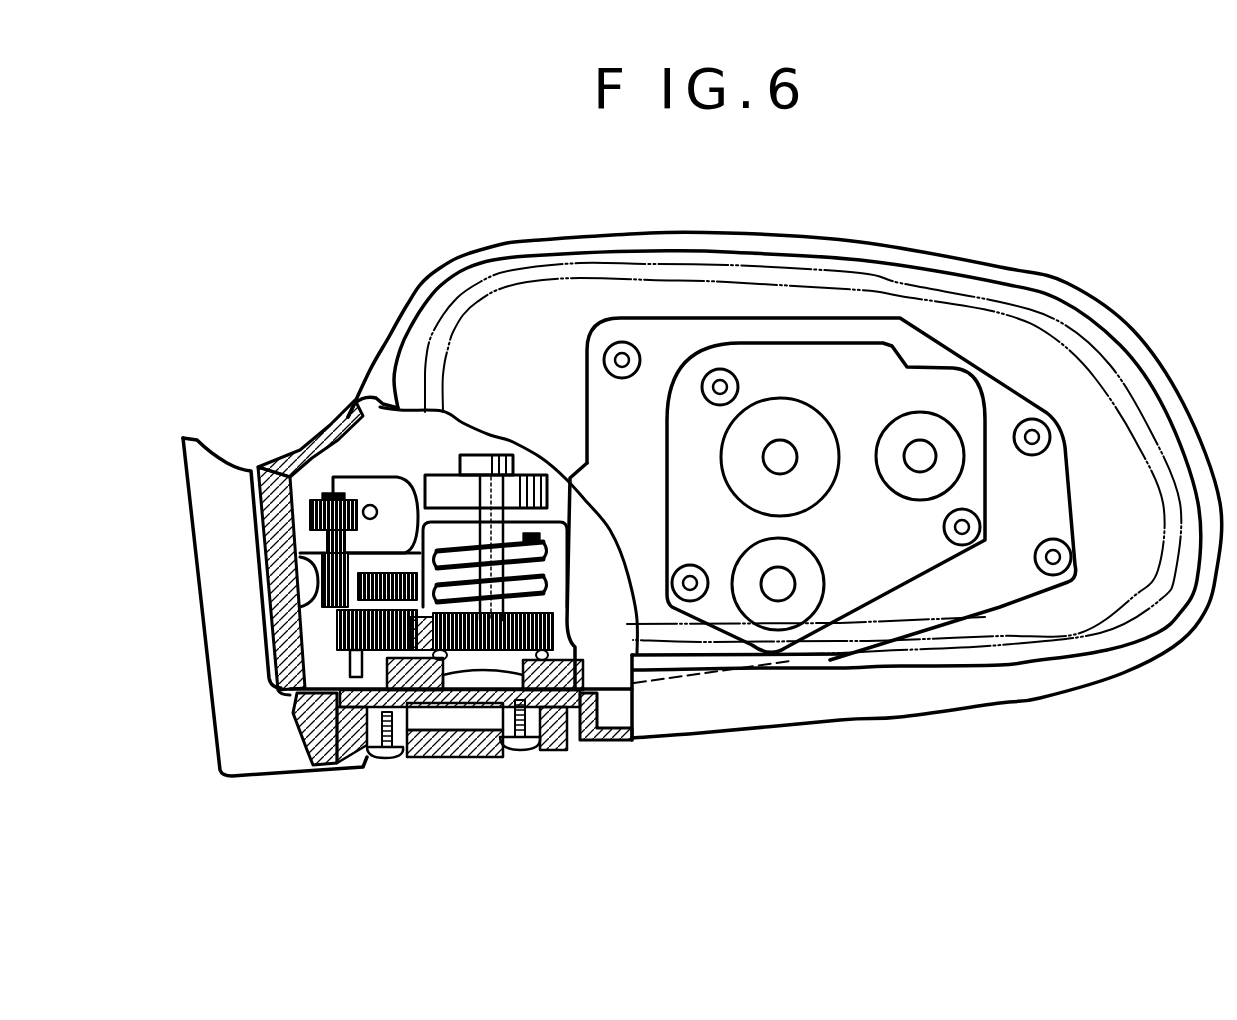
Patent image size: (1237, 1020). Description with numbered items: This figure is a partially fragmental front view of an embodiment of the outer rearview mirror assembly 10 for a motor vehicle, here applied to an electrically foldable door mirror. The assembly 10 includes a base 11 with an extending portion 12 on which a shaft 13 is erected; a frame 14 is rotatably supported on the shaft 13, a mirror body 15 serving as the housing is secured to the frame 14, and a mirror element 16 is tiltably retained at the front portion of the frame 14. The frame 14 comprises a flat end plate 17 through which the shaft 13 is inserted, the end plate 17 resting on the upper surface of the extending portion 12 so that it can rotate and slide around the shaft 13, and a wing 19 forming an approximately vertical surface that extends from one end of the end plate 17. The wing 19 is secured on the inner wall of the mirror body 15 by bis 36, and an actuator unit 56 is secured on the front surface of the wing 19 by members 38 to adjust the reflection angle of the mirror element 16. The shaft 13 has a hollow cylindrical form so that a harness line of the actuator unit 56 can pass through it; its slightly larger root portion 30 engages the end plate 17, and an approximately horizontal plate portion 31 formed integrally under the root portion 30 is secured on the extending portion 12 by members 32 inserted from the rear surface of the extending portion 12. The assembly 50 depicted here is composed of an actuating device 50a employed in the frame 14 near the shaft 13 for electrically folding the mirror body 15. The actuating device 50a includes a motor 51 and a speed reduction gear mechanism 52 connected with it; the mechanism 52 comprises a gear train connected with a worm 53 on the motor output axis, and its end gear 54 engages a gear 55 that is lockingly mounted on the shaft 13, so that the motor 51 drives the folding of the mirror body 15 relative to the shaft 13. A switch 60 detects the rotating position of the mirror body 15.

The outer rearview mirror assembly 10 is at (1070, 280).
The base 11 is at (208, 510).
The extending portion 12 is at (323, 763).
The shaft 13 is at (470, 513).
The frame 14 is at (571, 428).
The mirror body 15 is at (716, 232).
The mirror element 16 is at (813, 270).
The end plate 17 is at (548, 672).
The wing 19 is at (600, 397).
The root portion 30 is at (481, 655).
The plate portion 31 is at (433, 660).
The members 32 is at (381, 760).
The bis 36 is at (618, 352).
The members 38 is at (718, 372).
The drive unit 50 is at (337, 356).
The actuating device 50a is at (333, 661).
The motor 51 is at (396, 492).
The speed reduction gear mechanism 52 is at (304, 577).
The worm 53 is at (368, 495).
The end gear 54 is at (343, 630).
The gear 55 is at (570, 605).
The actuator unit 56 is at (946, 383).
The switch 60 is at (488, 490).